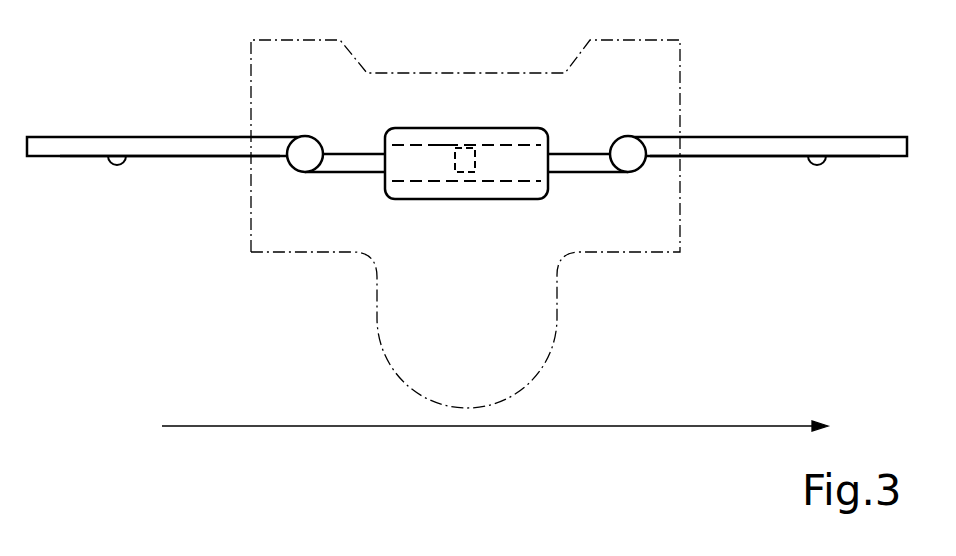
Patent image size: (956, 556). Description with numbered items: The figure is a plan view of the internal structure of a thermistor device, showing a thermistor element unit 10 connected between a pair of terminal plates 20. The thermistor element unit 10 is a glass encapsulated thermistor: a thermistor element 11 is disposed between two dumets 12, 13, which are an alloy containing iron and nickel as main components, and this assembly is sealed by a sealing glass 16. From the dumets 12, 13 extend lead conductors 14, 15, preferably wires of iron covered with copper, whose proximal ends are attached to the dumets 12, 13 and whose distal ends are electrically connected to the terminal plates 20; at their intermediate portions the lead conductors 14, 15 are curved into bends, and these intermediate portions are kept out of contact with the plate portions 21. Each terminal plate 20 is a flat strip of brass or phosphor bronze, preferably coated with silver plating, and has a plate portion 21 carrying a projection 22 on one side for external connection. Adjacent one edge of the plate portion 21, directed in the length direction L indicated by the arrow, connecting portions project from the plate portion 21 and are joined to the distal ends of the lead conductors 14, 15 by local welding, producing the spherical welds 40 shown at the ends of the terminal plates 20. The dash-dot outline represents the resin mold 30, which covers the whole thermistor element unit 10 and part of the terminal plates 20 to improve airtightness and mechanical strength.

The thermistor element unit 10 is at (412, 199).
The thermistor element 11 is at (470, 158).
The dumet 12 is at (422, 152).
The dumet 13 is at (515, 158).
The lead conductor 14 is at (347, 163).
The lead conductor 15 is at (585, 165).
The sealing glass 16 is at (447, 135).
The terminal plate 20 is at (42, 157).
The plate portion 21 is at (182, 157).
The projection 22 is at (117, 165).
The resin mold 30 is at (556, 346).
The spherical weld 40 is at (302, 148).
The length direction L is at (460, 427).